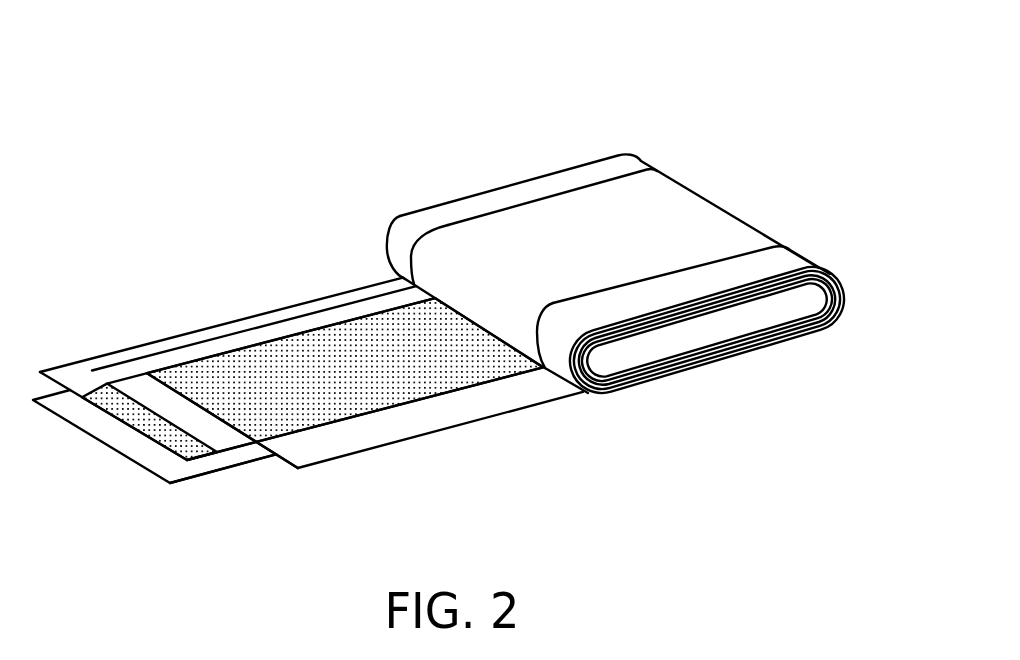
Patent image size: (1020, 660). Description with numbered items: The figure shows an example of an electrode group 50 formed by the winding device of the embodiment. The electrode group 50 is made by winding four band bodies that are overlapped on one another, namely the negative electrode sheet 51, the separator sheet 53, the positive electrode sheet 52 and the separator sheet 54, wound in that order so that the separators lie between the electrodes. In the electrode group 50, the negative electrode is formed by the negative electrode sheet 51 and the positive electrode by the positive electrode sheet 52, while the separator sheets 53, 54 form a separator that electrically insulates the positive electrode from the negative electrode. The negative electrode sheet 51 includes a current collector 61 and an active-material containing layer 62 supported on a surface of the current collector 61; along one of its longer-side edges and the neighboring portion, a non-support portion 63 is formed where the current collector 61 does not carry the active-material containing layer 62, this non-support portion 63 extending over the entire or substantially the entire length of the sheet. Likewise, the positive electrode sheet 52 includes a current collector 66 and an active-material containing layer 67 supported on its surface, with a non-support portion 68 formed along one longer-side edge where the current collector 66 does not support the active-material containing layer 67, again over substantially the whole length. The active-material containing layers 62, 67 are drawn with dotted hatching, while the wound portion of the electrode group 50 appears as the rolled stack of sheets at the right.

The electrode group 50 is at (728, 114).
The negative electrode sheet 51 is at (530, 391).
The positive electrode sheet 52 is at (245, 316).
The separator sheet 53 is at (233, 437).
The separator sheet 54 is at (205, 476).
The current collector 61 is at (503, 399).
The active-material containing layer 62 is at (380, 403).
The non-support portion 63 is at (450, 418).
The current collector 66 is at (177, 342).
The active-material containing layer 67 is at (93, 387).
The non-support portion 68 is at (330, 296).